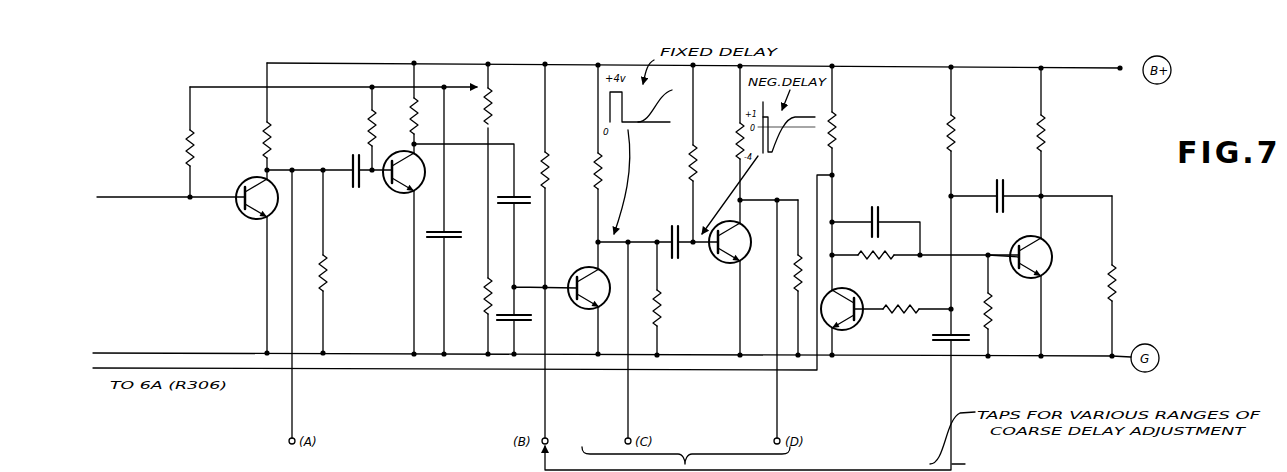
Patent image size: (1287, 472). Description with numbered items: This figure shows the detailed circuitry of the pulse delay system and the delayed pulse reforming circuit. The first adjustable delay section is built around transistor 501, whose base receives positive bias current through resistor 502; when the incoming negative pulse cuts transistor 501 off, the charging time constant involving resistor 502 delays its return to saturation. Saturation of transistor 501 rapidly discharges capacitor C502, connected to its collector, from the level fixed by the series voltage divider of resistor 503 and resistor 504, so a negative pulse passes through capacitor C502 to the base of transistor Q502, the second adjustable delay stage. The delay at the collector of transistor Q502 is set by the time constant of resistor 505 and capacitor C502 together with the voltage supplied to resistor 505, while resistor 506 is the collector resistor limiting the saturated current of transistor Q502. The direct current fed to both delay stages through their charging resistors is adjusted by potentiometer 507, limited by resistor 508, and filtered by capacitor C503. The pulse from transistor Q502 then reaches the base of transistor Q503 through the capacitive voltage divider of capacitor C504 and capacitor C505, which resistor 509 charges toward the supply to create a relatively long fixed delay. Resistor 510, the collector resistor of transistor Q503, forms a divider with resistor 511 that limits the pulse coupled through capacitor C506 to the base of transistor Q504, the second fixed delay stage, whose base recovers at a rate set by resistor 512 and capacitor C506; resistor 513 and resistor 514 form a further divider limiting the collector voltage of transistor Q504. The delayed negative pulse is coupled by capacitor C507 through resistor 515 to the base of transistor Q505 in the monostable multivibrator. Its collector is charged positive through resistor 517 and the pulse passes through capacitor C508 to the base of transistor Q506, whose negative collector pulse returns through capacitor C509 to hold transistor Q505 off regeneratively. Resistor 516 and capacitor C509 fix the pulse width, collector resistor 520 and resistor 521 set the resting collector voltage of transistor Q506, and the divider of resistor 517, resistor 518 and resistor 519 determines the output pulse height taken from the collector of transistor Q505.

The resistor R502 502 is at (188, 147).
The resistor R503 503 is at (265, 142).
The transistor Q501 501 is at (243, 214).
The capacitor C502 is at (353, 192).
The resistor R504 504 is at (328, 270).
The resistor R505 505 is at (370, 134).
The resistor R506 506 is at (412, 120).
The transistor Q502 is at (403, 208).
The capacitor C503 is at (466, 234).
The potentiometer R507 507 is at (492, 114).
The resistor R508 508 is at (485, 298).
The capacitor C504 is at (522, 194).
The capacitor C505 is at (512, 325).
The resistor R509 509 is at (547, 176).
The resistor R510 510 is at (595, 175).
The transistor Q503 is at (574, 304).
The resistor R511 511 is at (659, 312).
The capacitor C506 is at (670, 257).
The resistor R512 512 is at (691, 170).
The transistor Q504 is at (732, 266).
The resistor R513 513 is at (738, 140).
The resistor R514 514 is at (795, 273).
The resistor R517 517 is at (836, 125).
The transistor Q505 is at (843, 328).
The capacitor C508 is at (882, 210).
The resistor R518 518 is at (866, 260).
The resistor R515 515 is at (915, 308).
The capacitor C507 is at (932, 337).
The resistor R516 516 is at (948, 136).
The resistor R519 519 is at (992, 306).
The capacitor C509 is at (1010, 176).
The collector resistor R520 520 is at (1046, 136).
The transistor Q506 is at (1052, 270).
The resistor R521 521 is at (1116, 280).